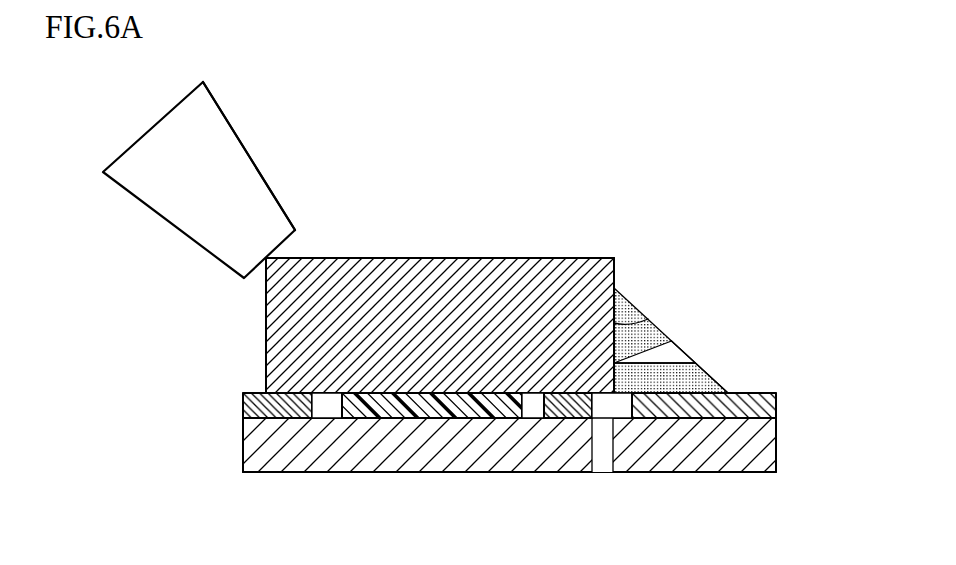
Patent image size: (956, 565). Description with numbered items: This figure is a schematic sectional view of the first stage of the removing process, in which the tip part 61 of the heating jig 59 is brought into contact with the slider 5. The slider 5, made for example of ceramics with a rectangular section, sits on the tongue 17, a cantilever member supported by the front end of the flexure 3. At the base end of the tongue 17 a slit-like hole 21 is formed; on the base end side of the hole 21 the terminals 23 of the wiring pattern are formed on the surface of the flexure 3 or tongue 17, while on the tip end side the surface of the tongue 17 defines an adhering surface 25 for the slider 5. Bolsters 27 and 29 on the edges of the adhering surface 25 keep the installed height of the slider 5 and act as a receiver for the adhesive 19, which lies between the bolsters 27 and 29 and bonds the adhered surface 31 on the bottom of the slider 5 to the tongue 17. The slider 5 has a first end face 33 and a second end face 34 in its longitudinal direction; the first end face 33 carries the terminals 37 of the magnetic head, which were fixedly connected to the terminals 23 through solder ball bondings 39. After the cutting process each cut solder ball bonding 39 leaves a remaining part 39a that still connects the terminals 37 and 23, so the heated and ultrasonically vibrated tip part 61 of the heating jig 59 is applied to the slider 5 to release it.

The flexure 3 is at (438, 475).
The slider 5 is at (528, 258).
The tongue 17 is at (330, 473).
The adhesive 19 is at (388, 405).
The hole 21 is at (600, 457).
The terminals 23 is at (760, 407).
The adhering surface 25 is at (330, 418).
The bolster 27 is at (567, 405).
The bolster 29 is at (243, 405).
The adhered surface 31 is at (531, 396).
The first end face 33 is at (615, 277).
The second end face 34 is at (266, 303).
The terminals 37 is at (641, 322).
The solder ball bonding 39 is at (660, 342).
The remaining part 39a is at (700, 375).
The heating jig 59 is at (222, 101).
The tip part 61 is at (247, 177).